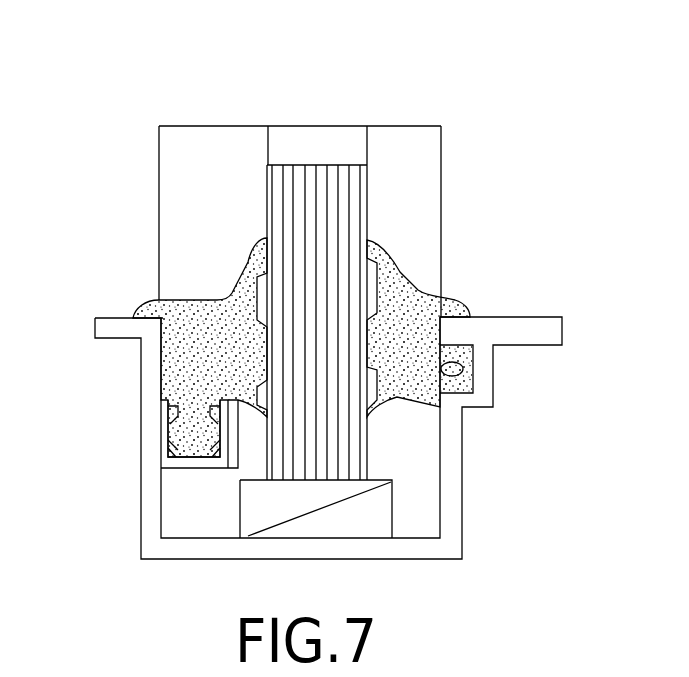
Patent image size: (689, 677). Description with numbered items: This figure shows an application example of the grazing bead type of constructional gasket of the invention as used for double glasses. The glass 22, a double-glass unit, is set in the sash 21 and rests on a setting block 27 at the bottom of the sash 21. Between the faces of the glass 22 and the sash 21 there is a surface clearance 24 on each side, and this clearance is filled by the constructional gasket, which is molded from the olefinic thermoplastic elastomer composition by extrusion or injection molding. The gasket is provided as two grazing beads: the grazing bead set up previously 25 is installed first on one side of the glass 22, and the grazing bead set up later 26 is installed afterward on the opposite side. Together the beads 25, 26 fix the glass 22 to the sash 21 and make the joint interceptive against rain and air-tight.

The sash 21 is at (466, 497).
The glass 22 is at (262, 198).
The surface clearance 24 is at (217, 127).
The grazing bead set up previously 25 is at (418, 270).
The grazing bead set up later 26 is at (153, 463).
The setting block 27 is at (230, 506).